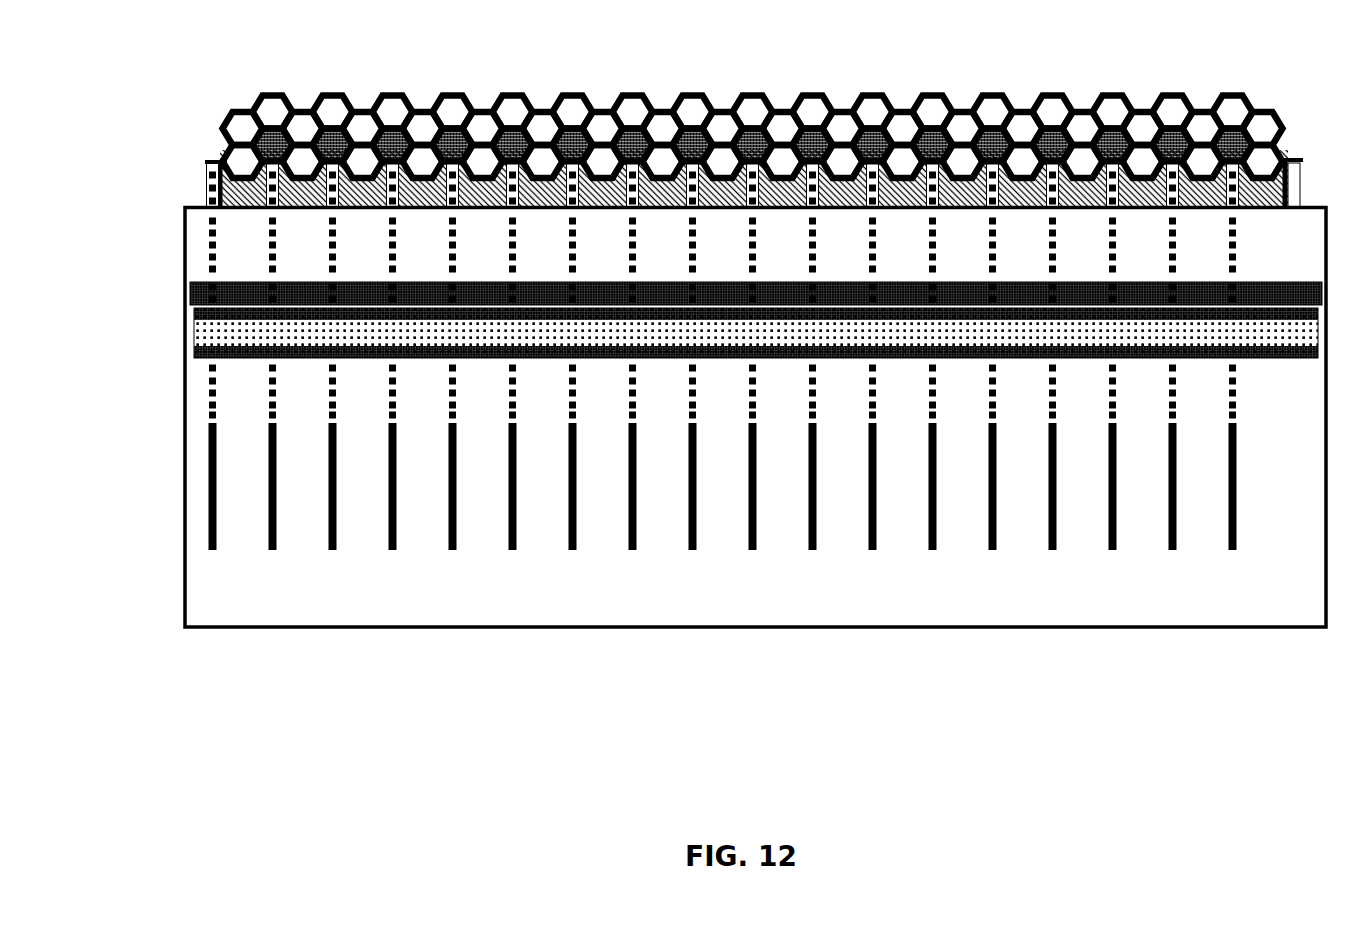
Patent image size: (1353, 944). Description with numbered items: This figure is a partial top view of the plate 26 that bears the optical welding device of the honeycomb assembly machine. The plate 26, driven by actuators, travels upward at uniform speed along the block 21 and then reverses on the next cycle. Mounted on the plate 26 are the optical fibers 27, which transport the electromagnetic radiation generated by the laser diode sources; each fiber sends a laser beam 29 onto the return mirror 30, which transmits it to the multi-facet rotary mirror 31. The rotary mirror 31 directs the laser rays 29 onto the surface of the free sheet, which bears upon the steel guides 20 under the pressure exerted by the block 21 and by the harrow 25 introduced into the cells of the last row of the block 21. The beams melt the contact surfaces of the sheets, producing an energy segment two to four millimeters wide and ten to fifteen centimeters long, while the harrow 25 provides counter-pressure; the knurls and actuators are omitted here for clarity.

The guides 20 is at (214, 177).
The block 21 is at (754, 118).
The harrow 25 is at (1112, 138).
The plate 26 is at (1021, 590).
The optical fibers 27 is at (681, 534).
The laser beams 29 is at (273, 390).
The return mirror 30 is at (192, 286).
The multi-facet rotary mirror 31 is at (216, 334).